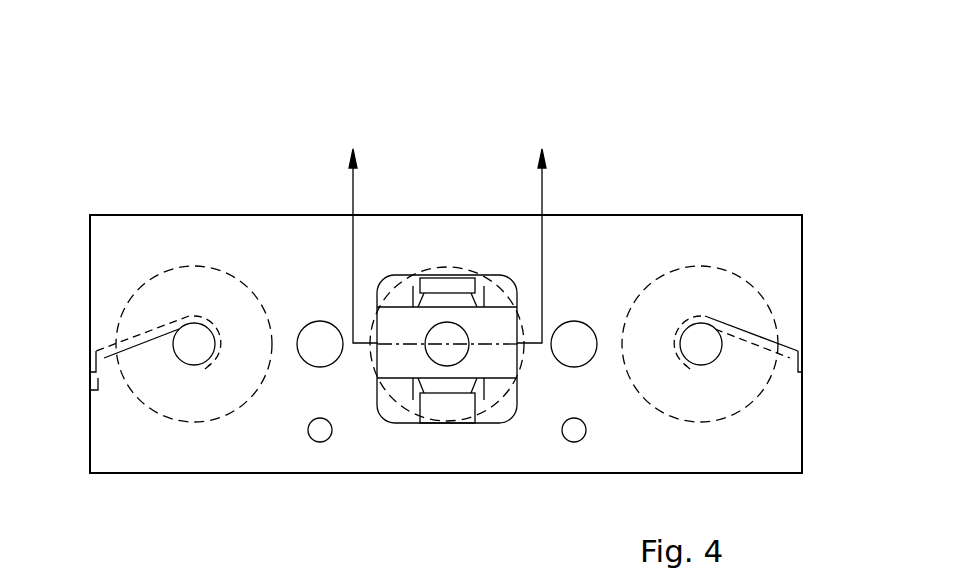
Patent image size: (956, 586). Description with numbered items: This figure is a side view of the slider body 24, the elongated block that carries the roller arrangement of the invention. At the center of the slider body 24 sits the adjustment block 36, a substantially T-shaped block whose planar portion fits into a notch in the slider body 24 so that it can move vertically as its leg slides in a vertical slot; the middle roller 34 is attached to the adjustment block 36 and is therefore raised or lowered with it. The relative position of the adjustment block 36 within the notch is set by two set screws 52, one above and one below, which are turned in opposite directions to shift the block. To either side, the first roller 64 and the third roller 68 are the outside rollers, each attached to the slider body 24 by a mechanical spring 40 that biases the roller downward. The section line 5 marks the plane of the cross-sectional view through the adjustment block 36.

The slider body 24 is at (477, 126).
The section line 5- 5 is at (448, 231).
The middle roller 34 is at (465, 268).
The adjustment block 36 is at (493, 365).
The set screws 52 is at (442, 285).
The first roller 64 is at (187, 267).
The third roller 68 is at (747, 280).
The mechanical spring 40 is at (797, 372).